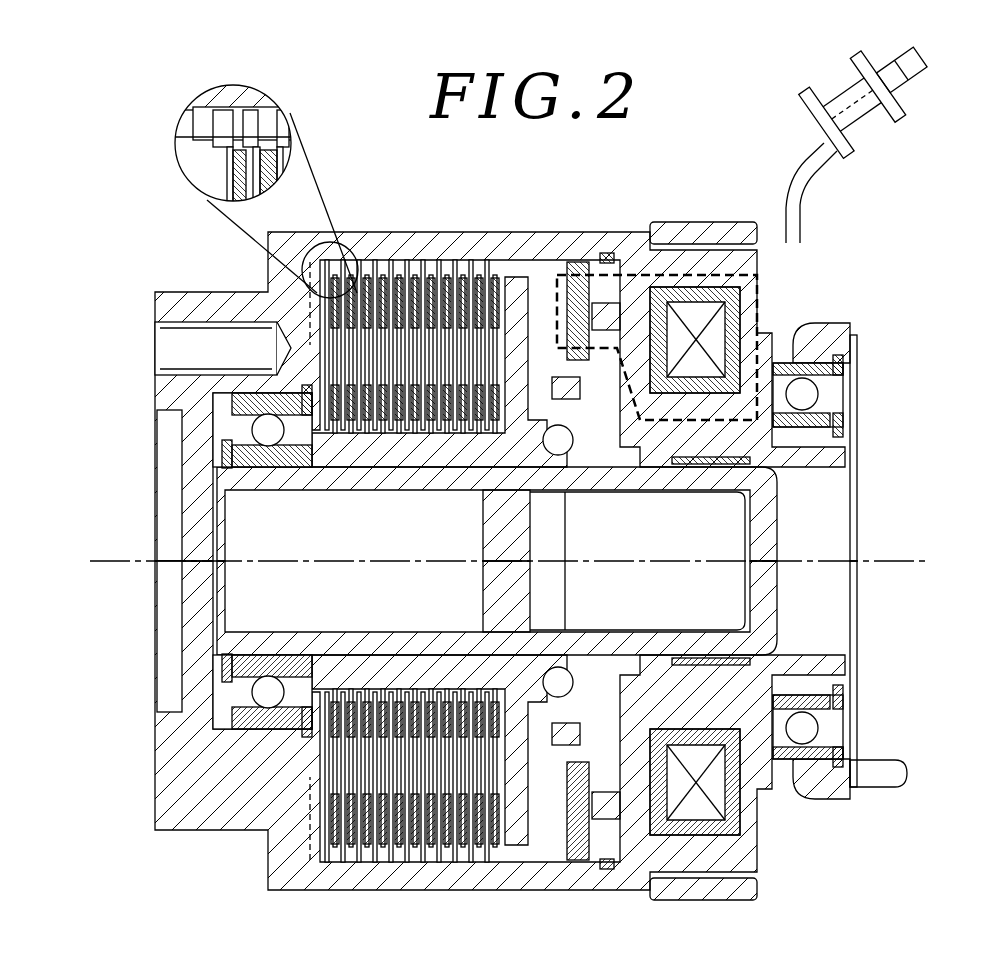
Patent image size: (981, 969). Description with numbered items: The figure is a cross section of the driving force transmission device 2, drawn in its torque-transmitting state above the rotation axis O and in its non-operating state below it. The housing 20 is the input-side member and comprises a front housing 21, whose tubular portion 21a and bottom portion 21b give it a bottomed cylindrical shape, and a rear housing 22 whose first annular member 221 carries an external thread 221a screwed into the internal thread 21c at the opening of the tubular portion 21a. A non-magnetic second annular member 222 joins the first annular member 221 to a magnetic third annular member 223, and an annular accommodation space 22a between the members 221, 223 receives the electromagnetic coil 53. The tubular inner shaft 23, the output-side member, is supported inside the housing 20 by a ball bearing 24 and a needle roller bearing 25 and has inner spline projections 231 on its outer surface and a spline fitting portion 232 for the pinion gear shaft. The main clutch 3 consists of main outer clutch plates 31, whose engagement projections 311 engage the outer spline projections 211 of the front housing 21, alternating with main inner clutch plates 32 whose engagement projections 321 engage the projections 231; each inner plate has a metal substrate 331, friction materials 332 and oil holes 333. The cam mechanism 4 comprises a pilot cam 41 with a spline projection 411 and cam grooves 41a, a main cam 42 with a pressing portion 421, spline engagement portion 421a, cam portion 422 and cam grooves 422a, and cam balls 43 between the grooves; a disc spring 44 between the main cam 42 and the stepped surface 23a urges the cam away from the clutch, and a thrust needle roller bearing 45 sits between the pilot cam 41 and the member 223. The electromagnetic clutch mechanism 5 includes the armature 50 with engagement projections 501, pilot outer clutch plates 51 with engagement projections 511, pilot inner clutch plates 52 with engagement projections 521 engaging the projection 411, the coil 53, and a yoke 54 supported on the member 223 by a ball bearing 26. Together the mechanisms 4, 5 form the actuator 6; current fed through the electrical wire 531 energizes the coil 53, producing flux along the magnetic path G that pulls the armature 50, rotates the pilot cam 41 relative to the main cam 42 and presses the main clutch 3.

The driving force transmission device 2 is at (905, 157).
The main clutch 3 is at (333, 866).
The cam mechanism 4 is at (518, 262).
The electromagnetic clutch mechanism 5 is at (560, 262).
The actuator 6 is at (540, 158).
The housing 20 is at (880, 192).
The front housing 21 is at (765, 232).
The tubular portion 21a is at (382, 234).
The bottom portion 21b is at (193, 782).
The internal thread 21c is at (738, 240).
The rear housing 22 is at (762, 272).
The accommodation space 22a is at (762, 833).
The inner shaft 23 is at (777, 645).
The stepped surface 23a is at (482, 630).
The ball bearing 24 is at (237, 448).
The needle roller bearing 25 is at (752, 461).
The ball bearing 26 is at (825, 380).
The main outer clutch plate 31 is at (222, 146).
The main inner clutch plate 32 is at (104, 150).
The pilot cam 41 is at (640, 480).
The cam grooves 41a is at (596, 440).
The main cam 42 is at (403, 172).
The cam balls 43 is at (562, 450).
The disc spring 44 is at (548, 470).
The thrust needle roller bearing 45 is at (604, 690).
The armature 50 is at (556, 870).
The pilot outer clutch plates 51 is at (606, 858).
The pilot inner clutch plates 52 is at (588, 858).
The electromagnetic coil 53 is at (717, 340).
The yoke 54 is at (840, 352).
The magnetic path G is at (712, 248).
The rotation axis O is at (904, 561).
The outer spline projections 211 is at (238, 120).
The first annular member 221 is at (670, 258).
The external thread 221a is at (702, 875).
The second annular member 222 is at (606, 255).
The third annular member 223 is at (843, 441).
The inner spline projections 231 is at (388, 690).
The spline fitting portion 232 is at (686, 630).
The engagement projections 311 is at (221, 123).
The engagement projections 321 is at (385, 450).
The substrate 331 is at (230, 176).
The friction materials 332 is at (228, 157).
The oil holes 333 is at (250, 360).
The spline projection 411 is at (522, 765).
The pressing portion 421 is at (498, 262).
The spline engagement portion 421a is at (508, 420).
The cam portion 422 is at (510, 280).
The cam grooves 422a is at (570, 470).
The engagement projections 501 is at (560, 872).
The engagement projections 511 is at (574, 828).
The engagement projections 521 is at (575, 690).
The electrical wire 531 is at (803, 165).